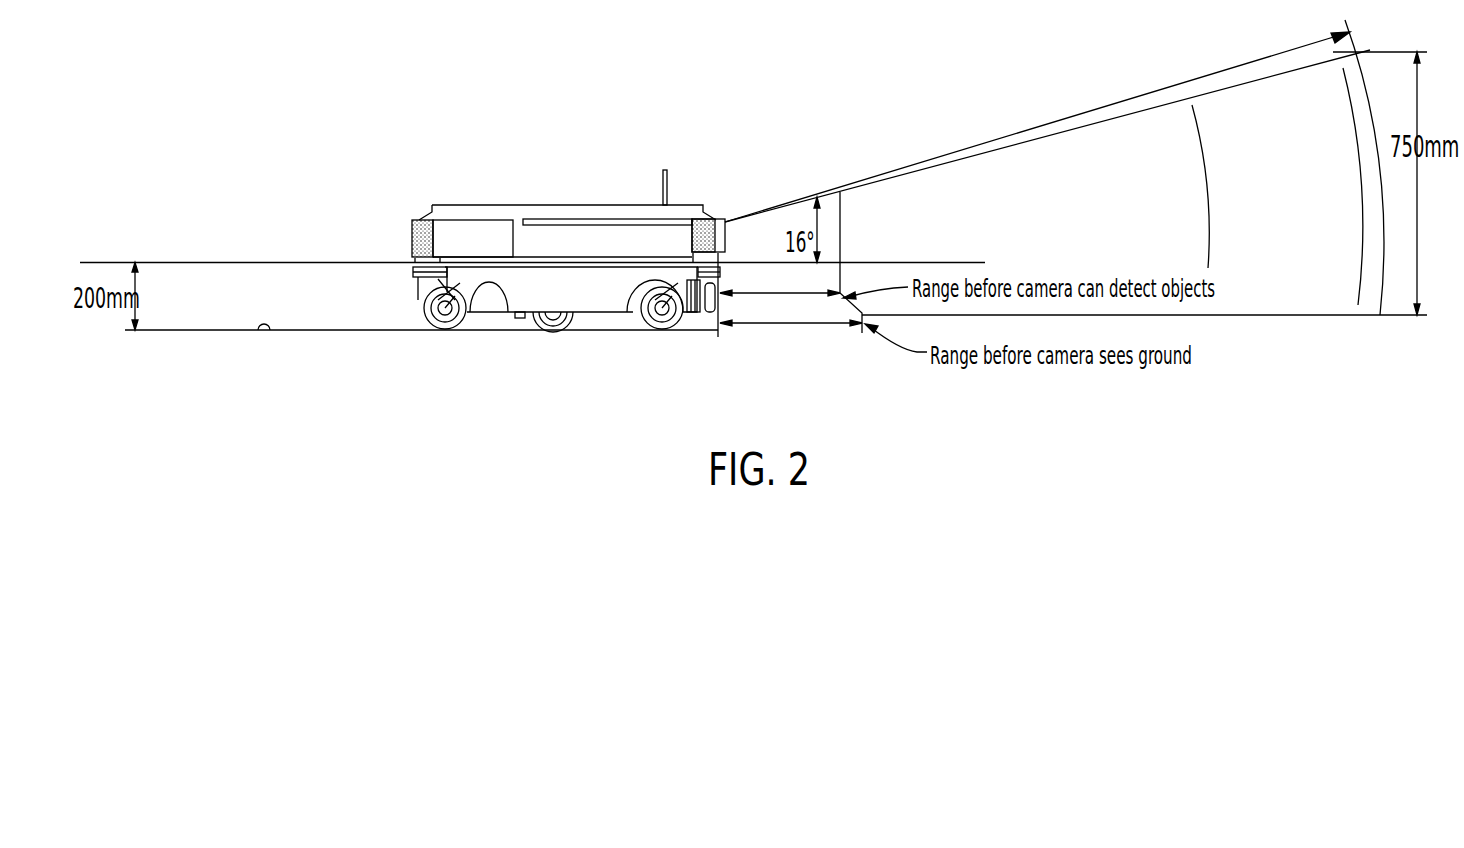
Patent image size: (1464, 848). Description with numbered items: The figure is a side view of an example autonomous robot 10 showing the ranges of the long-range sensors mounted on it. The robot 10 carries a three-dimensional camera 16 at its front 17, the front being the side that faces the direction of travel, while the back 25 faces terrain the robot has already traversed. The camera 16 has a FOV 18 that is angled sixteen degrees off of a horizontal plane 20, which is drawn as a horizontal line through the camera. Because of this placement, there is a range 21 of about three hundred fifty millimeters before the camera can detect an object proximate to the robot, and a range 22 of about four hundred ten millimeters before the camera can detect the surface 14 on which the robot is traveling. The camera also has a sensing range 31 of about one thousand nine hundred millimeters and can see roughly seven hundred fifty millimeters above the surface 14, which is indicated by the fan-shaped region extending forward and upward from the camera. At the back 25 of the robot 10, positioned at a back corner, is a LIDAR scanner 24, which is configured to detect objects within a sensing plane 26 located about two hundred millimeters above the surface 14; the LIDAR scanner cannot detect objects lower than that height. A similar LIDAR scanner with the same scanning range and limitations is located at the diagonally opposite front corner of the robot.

The robot 10 is at (552, 202).
The surface 14 is at (266, 333).
The 3D camera 16 is at (712, 228).
The front 17 is at (707, 320).
The FOV 18 is at (826, 208).
The horizontal plane 20 is at (953, 260).
The range 21 is at (805, 293).
The range 22 is at (750, 327).
The LIDAR scanner 24 is at (420, 218).
The back 25 is at (402, 288).
The sensing plane 26 is at (203, 260).
The sensing range 31 is at (985, 143).